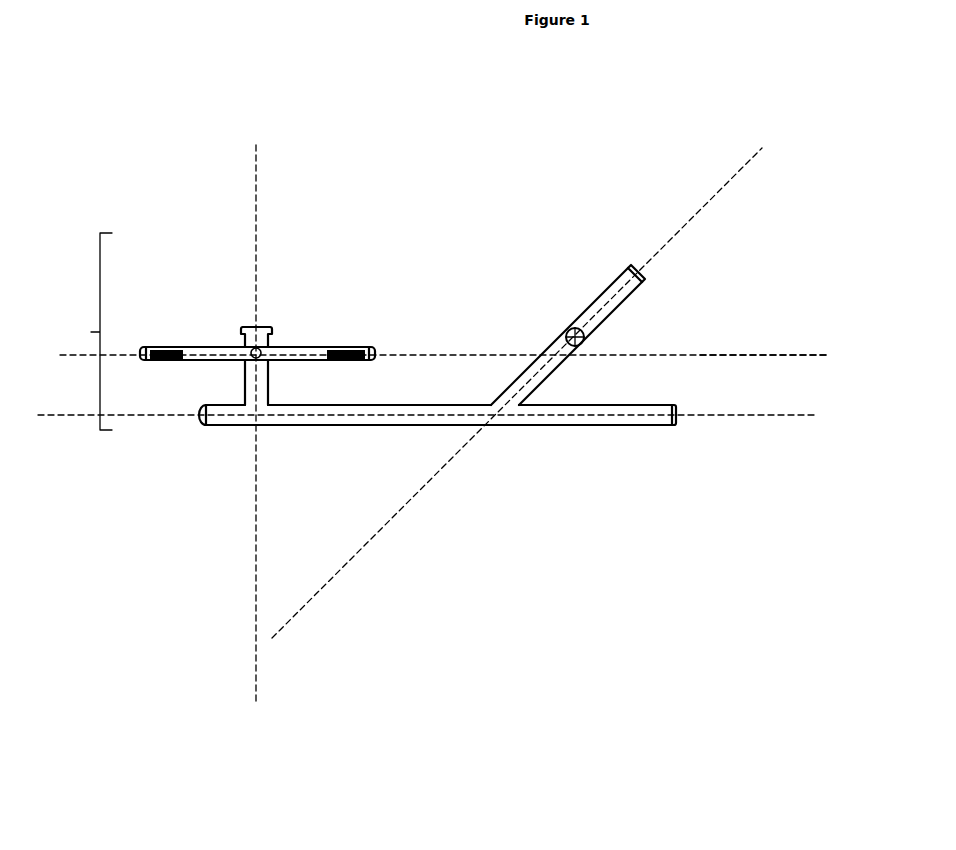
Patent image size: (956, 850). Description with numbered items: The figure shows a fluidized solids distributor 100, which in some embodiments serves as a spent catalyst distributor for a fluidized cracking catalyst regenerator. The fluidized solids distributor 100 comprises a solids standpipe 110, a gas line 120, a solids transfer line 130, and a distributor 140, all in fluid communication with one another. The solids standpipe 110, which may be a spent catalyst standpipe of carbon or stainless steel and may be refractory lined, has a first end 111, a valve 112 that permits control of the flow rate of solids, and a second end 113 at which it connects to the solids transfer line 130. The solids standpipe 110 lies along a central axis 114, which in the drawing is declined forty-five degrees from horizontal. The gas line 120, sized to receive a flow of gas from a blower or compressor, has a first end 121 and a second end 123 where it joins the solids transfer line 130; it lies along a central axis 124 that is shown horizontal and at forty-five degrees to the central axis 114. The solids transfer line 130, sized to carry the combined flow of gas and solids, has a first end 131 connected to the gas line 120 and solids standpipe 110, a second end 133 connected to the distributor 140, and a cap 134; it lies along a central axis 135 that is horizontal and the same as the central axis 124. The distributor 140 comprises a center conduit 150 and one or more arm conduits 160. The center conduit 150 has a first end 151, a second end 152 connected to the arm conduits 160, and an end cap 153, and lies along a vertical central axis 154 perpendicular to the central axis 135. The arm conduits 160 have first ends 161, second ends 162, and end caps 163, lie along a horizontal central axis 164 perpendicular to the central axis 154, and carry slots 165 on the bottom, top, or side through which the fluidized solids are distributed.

The fluidized solids distributor 100 is at (80, 331).
The solids standpipe 110 is at (579, 314).
The first end 111 is at (615, 267).
The valve 112 is at (565, 322).
The second end 113 is at (493, 390).
The central axis 114 is at (747, 150).
The gas line 120 is at (612, 442).
The first end 121 is at (676, 442).
The second end 123 is at (516, 428).
The central axis 124 is at (763, 430).
The solids transfer line 130 is at (442, 450).
The first end 131 is at (475, 429).
The second end 133 is at (217, 430).
The cap 134 is at (203, 440).
The central axis 135 is at (65, 423).
The distributor 140 is at (445, 350).
The center conduit 150 is at (257, 358).
The first end 151 is at (262, 403).
The second end 152 is at (240, 333).
The end cap 153 is at (252, 317).
The central axis 154 is at (268, 673).
The arm conduits 160 is at (274, 395).
The first ends 161 is at (238, 343).
The second ends 162 is at (146, 347).
The end caps 163 is at (138, 347).
The central axis 164 is at (782, 347).
The slots 165 is at (160, 362).